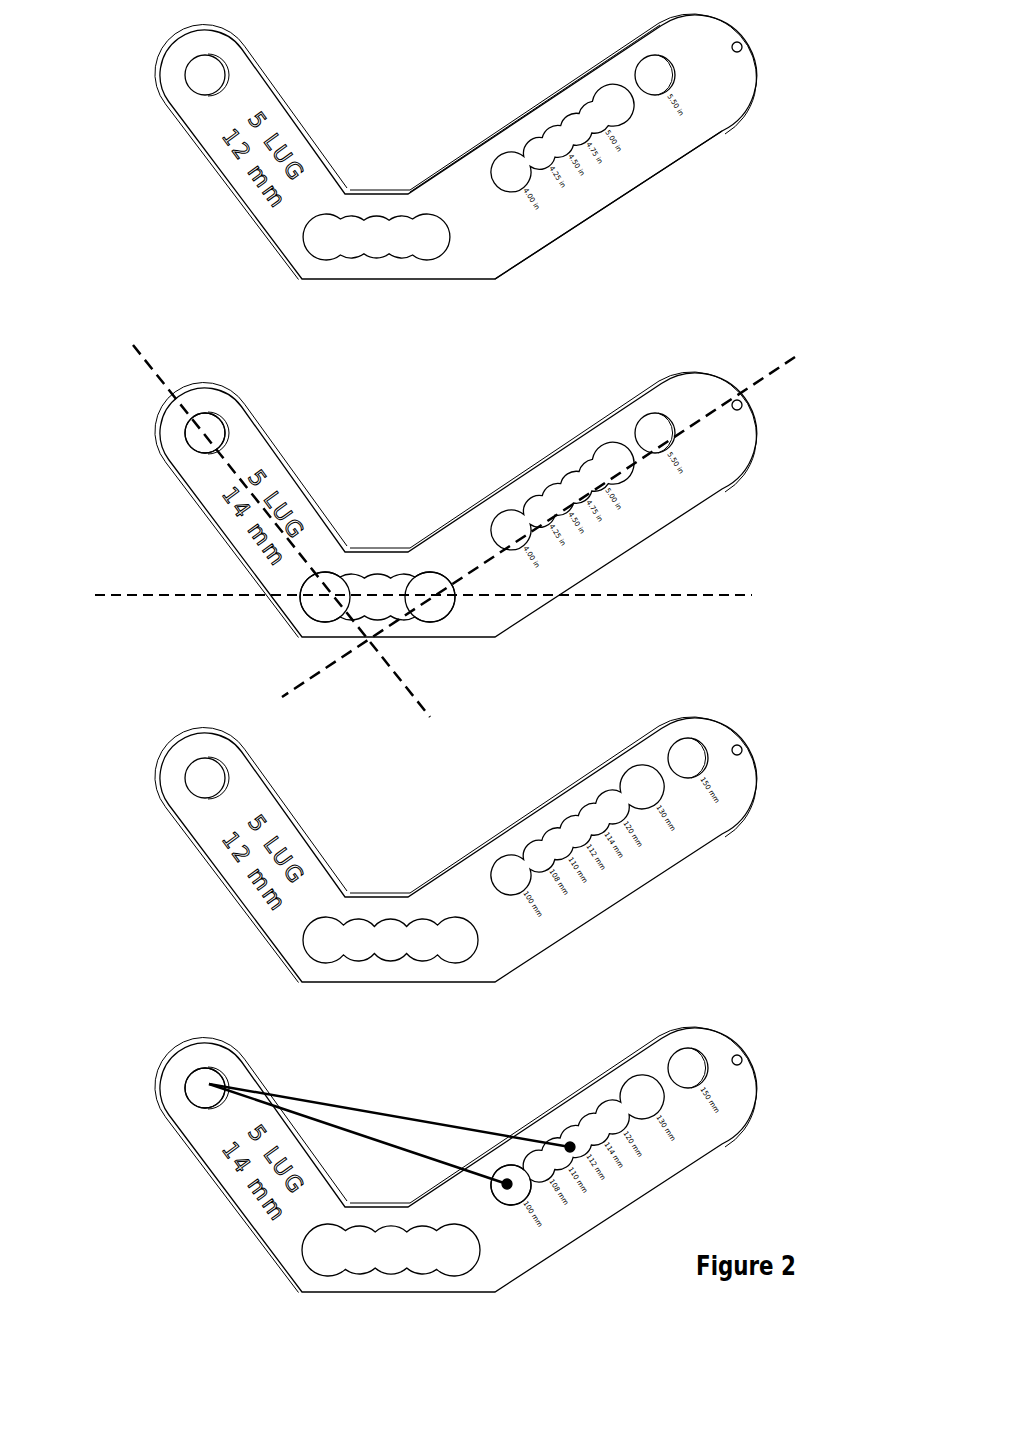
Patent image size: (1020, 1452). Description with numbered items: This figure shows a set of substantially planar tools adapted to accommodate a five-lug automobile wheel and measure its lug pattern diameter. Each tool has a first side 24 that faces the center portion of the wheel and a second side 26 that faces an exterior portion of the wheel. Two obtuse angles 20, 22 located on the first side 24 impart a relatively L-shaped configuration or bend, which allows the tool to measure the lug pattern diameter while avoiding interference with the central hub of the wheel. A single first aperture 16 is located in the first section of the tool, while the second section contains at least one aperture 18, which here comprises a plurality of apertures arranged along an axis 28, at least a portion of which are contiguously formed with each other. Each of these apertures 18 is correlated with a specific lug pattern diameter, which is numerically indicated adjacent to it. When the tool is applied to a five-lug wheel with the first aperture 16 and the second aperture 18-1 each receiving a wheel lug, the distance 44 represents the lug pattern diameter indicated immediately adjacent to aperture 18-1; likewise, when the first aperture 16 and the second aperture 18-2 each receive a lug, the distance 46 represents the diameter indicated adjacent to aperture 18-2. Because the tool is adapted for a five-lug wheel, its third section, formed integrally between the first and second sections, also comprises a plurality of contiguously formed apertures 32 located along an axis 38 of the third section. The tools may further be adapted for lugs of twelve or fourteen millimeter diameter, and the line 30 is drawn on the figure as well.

The first aperture 16 is at (220, 418).
The aperture 18 is at (643, 432).
The second aperture 18-1 is at (558, 1120).
The second aperture 18-2 is at (503, 1202).
The obtuse angle 20 is at (336, 582).
The obtuse angle 22 is at (430, 580).
The first side 24 is at (481, 130).
The second side 26 is at (632, 191).
The axis 28 is at (554, 516).
The second axis 30 is at (262, 519).
The plurality of apertures 32 is at (393, 945).
The axis 38 is at (443, 588).
The distance 44 is at (392, 1118).
The distance 46 is at (360, 1136).